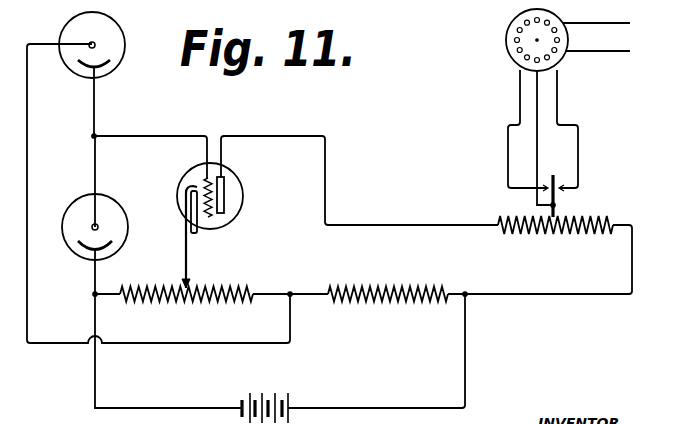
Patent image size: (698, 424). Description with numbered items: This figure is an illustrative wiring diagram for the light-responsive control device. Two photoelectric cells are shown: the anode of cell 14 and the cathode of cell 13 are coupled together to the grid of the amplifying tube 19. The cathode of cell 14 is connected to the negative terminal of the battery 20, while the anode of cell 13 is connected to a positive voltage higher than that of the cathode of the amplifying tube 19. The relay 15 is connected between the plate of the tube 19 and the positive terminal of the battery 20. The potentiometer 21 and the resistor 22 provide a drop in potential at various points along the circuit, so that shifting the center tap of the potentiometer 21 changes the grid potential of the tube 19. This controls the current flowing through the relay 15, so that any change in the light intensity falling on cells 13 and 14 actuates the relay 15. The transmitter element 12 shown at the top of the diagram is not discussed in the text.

The transmitter (microphone) 12 is at (507, 33).
The cell 13 is at (152, 65).
The cell 14 is at (110, 205).
The relay 15 is at (558, 199).
The amplifying tube 19 is at (243, 193).
The battery 20 is at (265, 390).
The potentiometer 21 is at (192, 305).
The resistor 22 is at (413, 306).